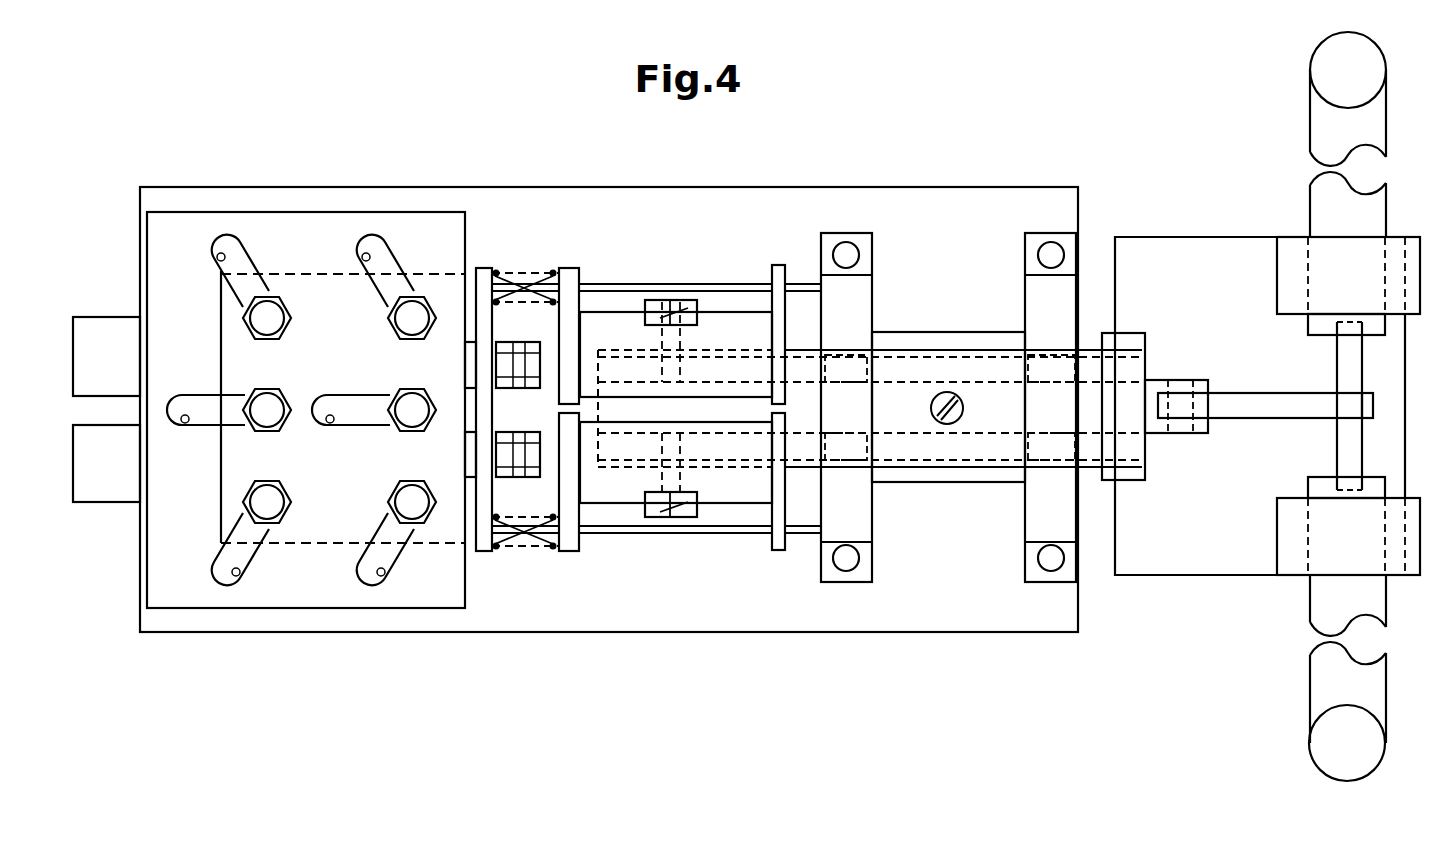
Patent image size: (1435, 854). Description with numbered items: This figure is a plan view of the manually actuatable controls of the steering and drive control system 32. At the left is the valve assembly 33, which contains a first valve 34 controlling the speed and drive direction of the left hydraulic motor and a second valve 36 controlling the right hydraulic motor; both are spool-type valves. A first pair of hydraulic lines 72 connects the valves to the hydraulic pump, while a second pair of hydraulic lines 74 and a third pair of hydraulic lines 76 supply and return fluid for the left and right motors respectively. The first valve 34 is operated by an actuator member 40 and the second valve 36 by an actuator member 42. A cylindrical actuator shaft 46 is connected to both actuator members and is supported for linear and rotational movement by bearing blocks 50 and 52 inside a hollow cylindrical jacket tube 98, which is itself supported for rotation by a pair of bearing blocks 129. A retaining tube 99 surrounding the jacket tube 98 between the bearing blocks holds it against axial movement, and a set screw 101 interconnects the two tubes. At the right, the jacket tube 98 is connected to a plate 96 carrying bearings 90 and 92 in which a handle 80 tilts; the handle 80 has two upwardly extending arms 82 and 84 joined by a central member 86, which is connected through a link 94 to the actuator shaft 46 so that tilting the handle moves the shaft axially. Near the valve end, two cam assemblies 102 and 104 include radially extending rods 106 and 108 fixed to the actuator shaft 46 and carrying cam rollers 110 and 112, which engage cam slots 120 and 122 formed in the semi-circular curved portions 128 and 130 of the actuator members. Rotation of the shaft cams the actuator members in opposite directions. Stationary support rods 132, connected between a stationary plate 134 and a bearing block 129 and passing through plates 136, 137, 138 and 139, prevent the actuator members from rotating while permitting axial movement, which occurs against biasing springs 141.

The steering and drive control system 32 is at (883, 118).
The valve assembly 33 is at (184, 192).
The first valve 34 is at (100, 470).
The second valve 36 is at (100, 340).
The actuator member 40 is at (546, 515).
The actuator member 42 is at (547, 318).
The actuator shaft 46 is at (1147, 388).
The bearing block 50 is at (864, 367).
The bearing block 52 is at (1032, 367).
The first pair of hydraulic lines 72 is at (230, 398).
The second pair of hydraulic lines 74 is at (240, 560).
The third pair of hydraulic lines 76 is at (238, 262).
The handle 80 is at (1286, 138).
The arm 82 is at (1340, 743).
The arm 84 is at (1340, 70).
The central member 86 is at (1347, 363).
The bearing 90 is at (1292, 522).
The bearing 92 is at (1293, 250).
The link 94 is at (1232, 408).
The plate 96 is at (1155, 553).
The jacket tube 98 is at (975, 352).
The retaining tube 99 is at (953, 478).
The set screw 101 is at (939, 392).
The cam assembly 102 is at (658, 530).
The cam assembly 104 is at (674, 293).
The rod 106 is at (660, 478).
The rod 108 is at (662, 340).
The cam roller 110 is at (686, 517).
The cam roller 112 is at (699, 300).
The cam slot 120 is at (700, 500).
The cam slot 122 is at (699, 318).
The curved portion 128 is at (600, 503).
The bearing block 129 is at (855, 528).
The curved portion 130 is at (617, 287).
The support rods 132 is at (803, 287).
The stationary plate 134 is at (490, 268).
The plate 136 is at (568, 547).
The plate 137 is at (780, 552).
The plate 138 is at (565, 267).
The plate 139 is at (779, 264).
The biasing springs 141 is at (529, 283).